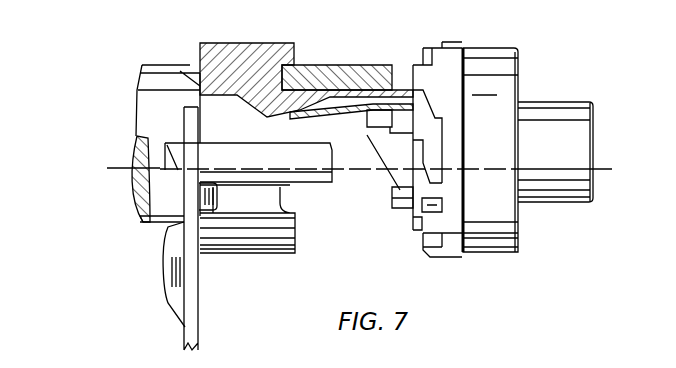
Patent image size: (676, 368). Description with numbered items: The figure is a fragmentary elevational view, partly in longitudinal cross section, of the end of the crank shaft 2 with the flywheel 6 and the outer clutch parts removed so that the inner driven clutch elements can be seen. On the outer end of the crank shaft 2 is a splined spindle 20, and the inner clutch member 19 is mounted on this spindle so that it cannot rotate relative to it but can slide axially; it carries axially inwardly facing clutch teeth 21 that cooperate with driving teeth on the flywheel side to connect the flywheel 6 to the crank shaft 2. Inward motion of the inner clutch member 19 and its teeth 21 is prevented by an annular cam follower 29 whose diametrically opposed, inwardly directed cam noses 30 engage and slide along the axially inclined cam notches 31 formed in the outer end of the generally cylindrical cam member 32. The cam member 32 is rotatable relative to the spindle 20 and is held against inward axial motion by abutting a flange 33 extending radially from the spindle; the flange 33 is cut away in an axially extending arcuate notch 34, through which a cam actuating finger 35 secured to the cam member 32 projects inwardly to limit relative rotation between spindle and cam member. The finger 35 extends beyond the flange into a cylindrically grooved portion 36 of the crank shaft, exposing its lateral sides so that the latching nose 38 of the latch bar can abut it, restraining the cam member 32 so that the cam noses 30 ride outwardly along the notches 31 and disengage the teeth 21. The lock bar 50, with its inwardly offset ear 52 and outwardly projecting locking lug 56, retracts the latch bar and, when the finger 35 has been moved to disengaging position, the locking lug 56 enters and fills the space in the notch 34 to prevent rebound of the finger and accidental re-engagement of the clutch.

The crank shaft 2 is at (209, 315).
The flywheel 6 is at (612, 169).
The inner clutch member 19 is at (507, 72).
The splined spindle 20 is at (400, 130).
The clutch teeth 21 is at (430, 50).
The cam follower 29 is at (402, 150).
The cam noses 30 is at (397, 187).
The cam notches 31 is at (377, 130).
The cam member 32 is at (348, 70).
The flange 33 is at (272, 58).
The arcuate notch 34 is at (272, 210).
The cam actuating finger 35 is at (258, 178).
The cylindrically grooved portion 36 is at (186, 70).
The latching nose 38 is at (140, 184).
The lock bar 50 is at (190, 330).
The ear 52 is at (182, 269).
The locking lug 56 is at (200, 206).